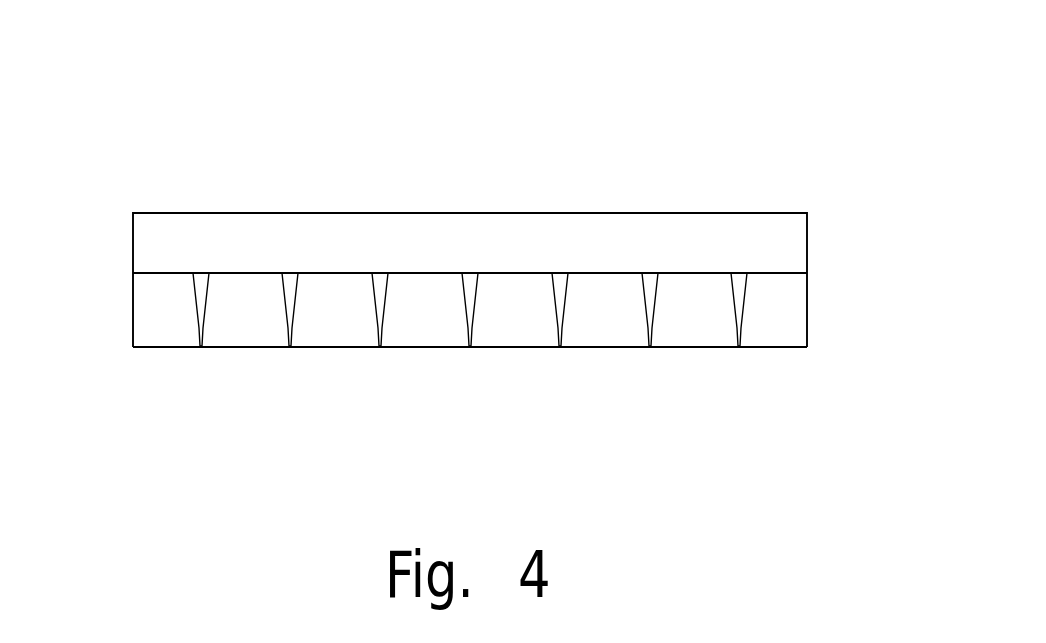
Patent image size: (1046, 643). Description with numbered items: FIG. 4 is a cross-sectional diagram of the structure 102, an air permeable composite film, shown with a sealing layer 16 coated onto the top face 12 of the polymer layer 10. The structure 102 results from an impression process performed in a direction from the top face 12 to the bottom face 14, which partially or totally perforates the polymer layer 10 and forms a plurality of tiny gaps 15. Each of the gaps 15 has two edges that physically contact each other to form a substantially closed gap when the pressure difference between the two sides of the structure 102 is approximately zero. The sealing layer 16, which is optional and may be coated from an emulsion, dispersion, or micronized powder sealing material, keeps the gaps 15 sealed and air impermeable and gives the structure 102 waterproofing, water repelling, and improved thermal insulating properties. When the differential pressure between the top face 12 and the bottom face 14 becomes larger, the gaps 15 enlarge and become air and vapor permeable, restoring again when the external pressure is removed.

The structure 102 is at (495, 244).
The sealing layer 16 is at (540, 240).
The polymer layer 10 is at (538, 303).
The top face 12 is at (470, 201).
The bottom face 14 is at (470, 415).
The gaps 15 is at (470, 235).